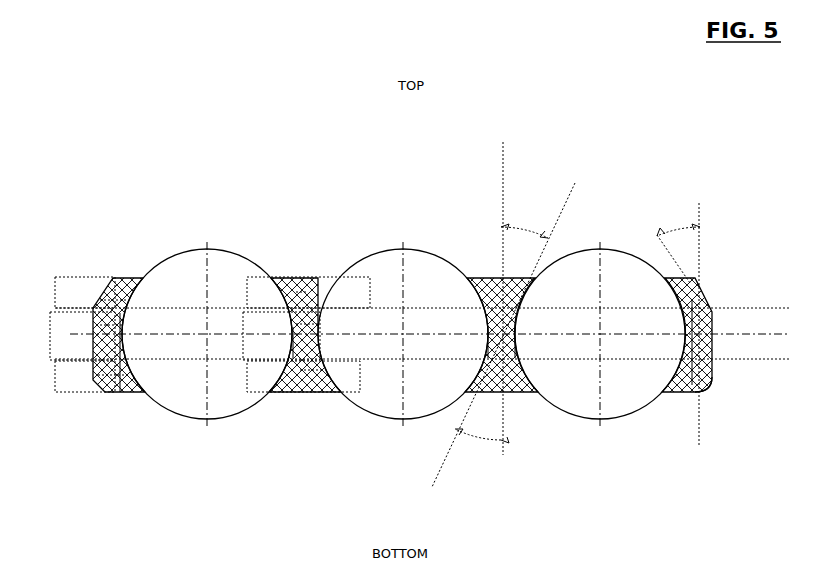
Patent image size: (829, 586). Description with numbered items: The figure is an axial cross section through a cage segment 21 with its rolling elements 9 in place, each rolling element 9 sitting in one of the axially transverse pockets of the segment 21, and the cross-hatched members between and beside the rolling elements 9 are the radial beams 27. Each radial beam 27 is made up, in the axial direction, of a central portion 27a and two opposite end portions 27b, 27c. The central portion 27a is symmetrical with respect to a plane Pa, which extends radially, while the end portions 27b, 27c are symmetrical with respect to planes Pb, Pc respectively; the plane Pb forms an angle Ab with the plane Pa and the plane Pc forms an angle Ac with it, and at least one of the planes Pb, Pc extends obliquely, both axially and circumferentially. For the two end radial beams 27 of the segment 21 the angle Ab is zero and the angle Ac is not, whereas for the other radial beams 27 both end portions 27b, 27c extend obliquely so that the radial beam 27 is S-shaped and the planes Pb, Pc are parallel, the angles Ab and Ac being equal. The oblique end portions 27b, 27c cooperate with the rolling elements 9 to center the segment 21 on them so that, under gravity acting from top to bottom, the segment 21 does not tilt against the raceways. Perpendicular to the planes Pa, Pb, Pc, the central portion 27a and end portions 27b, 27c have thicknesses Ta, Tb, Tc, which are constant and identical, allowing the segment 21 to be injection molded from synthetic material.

The rolling element 9 is at (635, 285).
The radial beam 27 is at (305, 277).
The central portion 27a is at (50, 336).
The end portion 27b is at (55, 377).
The end portion 27c is at (55, 295).
The segment 21 is at (698, 395).
The thickness of the central portion Ta is at (219, 324).
The thickness of the end portion Tb is at (224, 373).
The thickness of the end portion Tc is at (211, 295).
The plane of symmetry of the central portion Pa is at (501, 287).
The plane of symmetry of the end portion Pb is at (455, 417).
The plane of symmetry of the end portion Pc is at (543, 249).
The angle Ab is at (482, 444).
The angle Ac is at (600, 325).